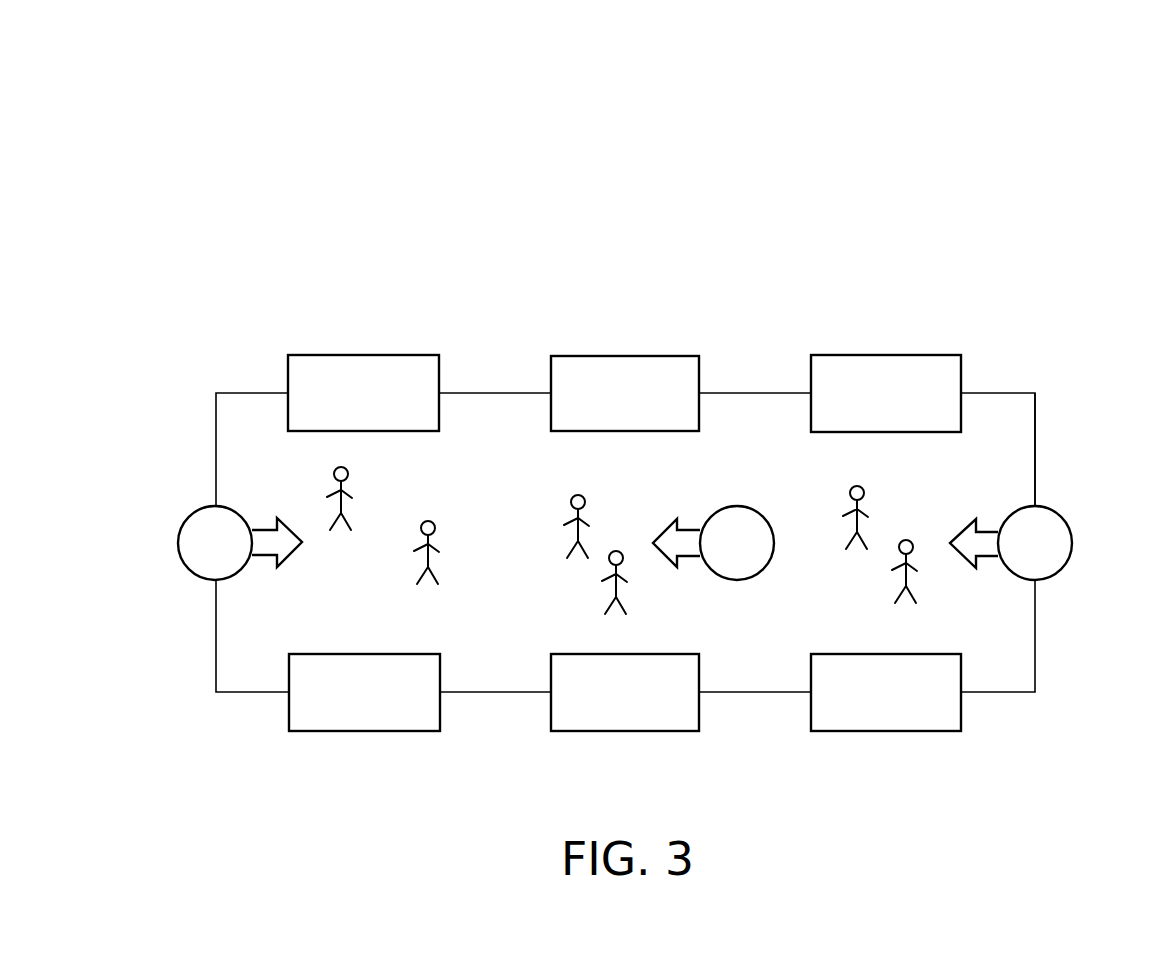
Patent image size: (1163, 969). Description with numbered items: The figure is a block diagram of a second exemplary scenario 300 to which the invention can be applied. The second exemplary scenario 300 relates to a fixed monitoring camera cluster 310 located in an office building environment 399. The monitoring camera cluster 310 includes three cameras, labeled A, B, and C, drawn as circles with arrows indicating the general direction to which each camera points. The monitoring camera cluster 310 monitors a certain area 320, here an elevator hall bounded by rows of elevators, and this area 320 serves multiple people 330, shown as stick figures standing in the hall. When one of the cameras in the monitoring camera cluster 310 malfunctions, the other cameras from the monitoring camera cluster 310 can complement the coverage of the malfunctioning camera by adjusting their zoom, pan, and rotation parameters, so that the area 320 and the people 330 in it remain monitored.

The second exemplary scenario 300 is at (150, 52).
The monitoring camera cluster 310 is at (1107, 545).
The area 320 is at (1012, 422).
The people 330 is at (307, 493).
The office building environment 399 is at (1033, 315).